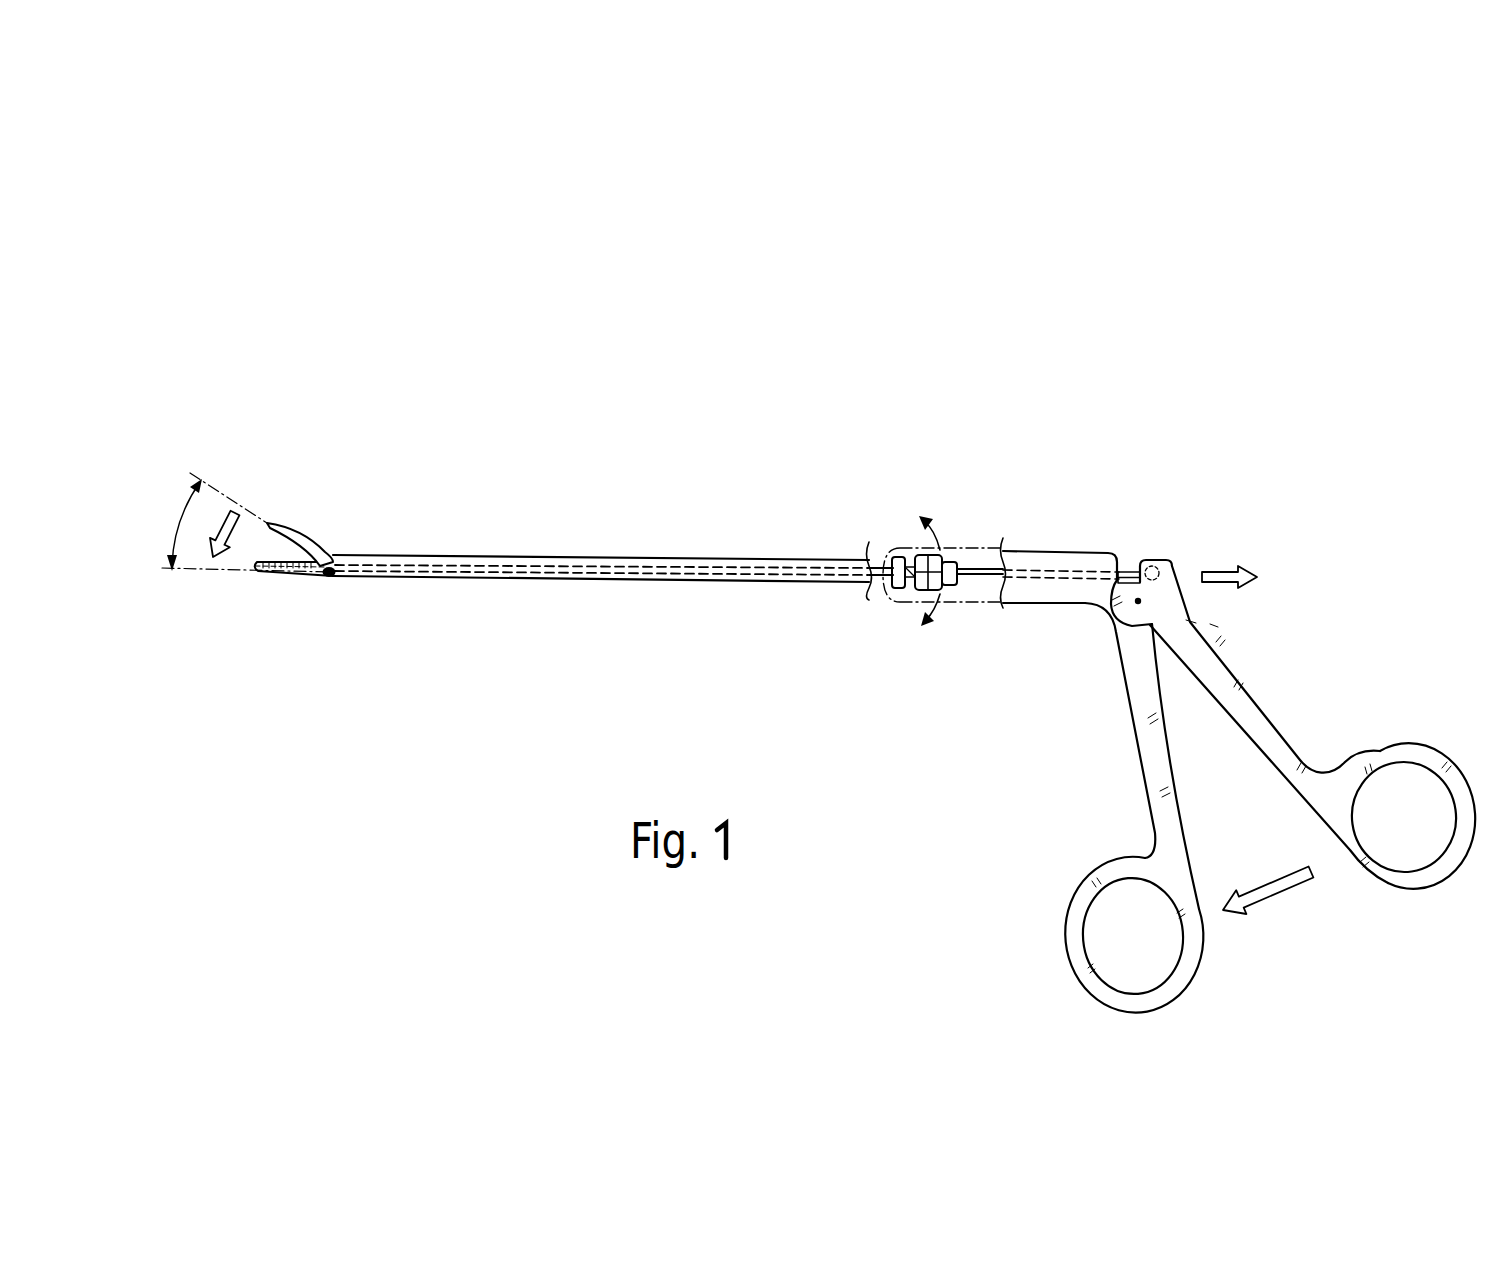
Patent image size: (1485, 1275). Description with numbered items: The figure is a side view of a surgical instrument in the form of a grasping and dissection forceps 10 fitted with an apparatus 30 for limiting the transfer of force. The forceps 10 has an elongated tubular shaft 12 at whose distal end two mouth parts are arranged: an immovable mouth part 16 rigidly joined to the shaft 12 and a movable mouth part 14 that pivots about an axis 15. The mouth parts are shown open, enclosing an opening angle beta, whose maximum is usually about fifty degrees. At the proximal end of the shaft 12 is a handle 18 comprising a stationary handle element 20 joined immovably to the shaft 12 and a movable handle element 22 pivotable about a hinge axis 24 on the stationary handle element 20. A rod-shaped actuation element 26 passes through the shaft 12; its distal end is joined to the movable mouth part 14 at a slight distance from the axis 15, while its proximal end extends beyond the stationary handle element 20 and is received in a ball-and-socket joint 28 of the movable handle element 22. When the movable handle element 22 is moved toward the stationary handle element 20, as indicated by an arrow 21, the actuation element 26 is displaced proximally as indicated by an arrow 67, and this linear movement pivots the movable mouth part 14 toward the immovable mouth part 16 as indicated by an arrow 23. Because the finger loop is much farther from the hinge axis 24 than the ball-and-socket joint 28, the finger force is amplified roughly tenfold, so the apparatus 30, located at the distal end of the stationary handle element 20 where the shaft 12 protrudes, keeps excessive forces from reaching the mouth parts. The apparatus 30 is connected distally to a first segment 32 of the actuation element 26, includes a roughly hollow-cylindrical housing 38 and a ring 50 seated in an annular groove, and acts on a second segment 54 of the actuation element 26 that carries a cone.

The forceps 10 is at (808, 432).
The tubular shaft 12 is at (487, 555).
The movable mouth part 14 is at (297, 532).
The pivot axis 15 is at (328, 563).
The immovable mouth part 16 is at (290, 570).
The handle 18 is at (1091, 556).
The stationary handle element 20 is at (1150, 753).
The arrow 21 is at (1285, 883).
The movable handle element 22 is at (1275, 733).
The arrow 23 is at (216, 527).
The hinge axis 24 is at (1141, 601).
The rod-shaped actuation element 26 is at (1128, 560).
The ball-and-socket joint 28 is at (1160, 576).
The apparatus for limiting the transfer of force 30 is at (953, 516).
The first segment 32 is at (715, 562).
The housing 38 is at (897, 555).
The ring 50 is at (946, 598).
The second segment 54 is at (1060, 578).
The arrow 67 is at (1222, 574).